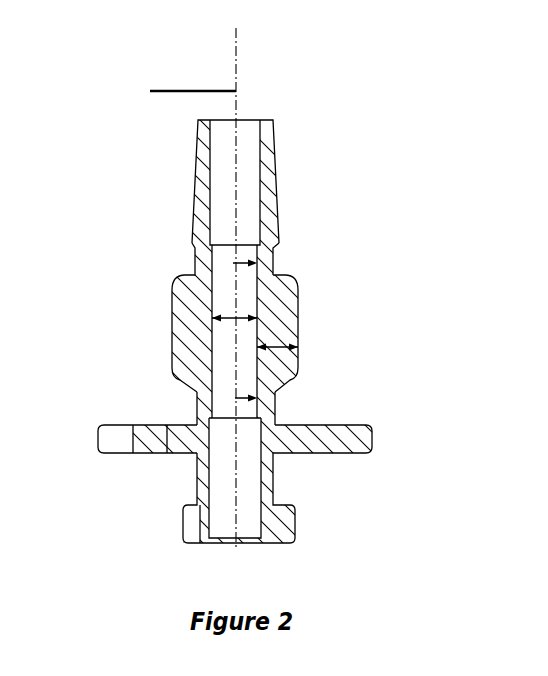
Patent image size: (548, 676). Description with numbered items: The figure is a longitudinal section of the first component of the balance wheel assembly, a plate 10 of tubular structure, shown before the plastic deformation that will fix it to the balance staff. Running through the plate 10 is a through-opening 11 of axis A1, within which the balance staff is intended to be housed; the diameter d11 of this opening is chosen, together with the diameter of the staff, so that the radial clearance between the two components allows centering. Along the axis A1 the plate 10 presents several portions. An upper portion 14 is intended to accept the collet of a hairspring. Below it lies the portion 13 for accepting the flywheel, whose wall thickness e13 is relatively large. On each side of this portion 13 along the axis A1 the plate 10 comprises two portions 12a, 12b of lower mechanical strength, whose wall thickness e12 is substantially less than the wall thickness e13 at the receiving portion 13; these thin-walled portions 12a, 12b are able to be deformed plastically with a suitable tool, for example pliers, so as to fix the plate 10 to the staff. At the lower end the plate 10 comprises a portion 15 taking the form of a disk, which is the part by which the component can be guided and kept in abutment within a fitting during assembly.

The plate 10 is at (197, 193).
The through-opening 11 is at (236, 72).
The axis A1 is at (179, 91).
The portion of lower mechanical strength 12a is at (187, 263).
The portion of lower mechanical strength 12b is at (188, 398).
The portion for accepting the flywheel 13 is at (309, 328).
The portion for accepting a collet 14 is at (283, 198).
The disk portion 15 is at (384, 438).
The wall thickness e12 is at (284, 397).
The wall thickness e13 is at (276, 346).
The diameter of the opening d11 is at (237, 318).